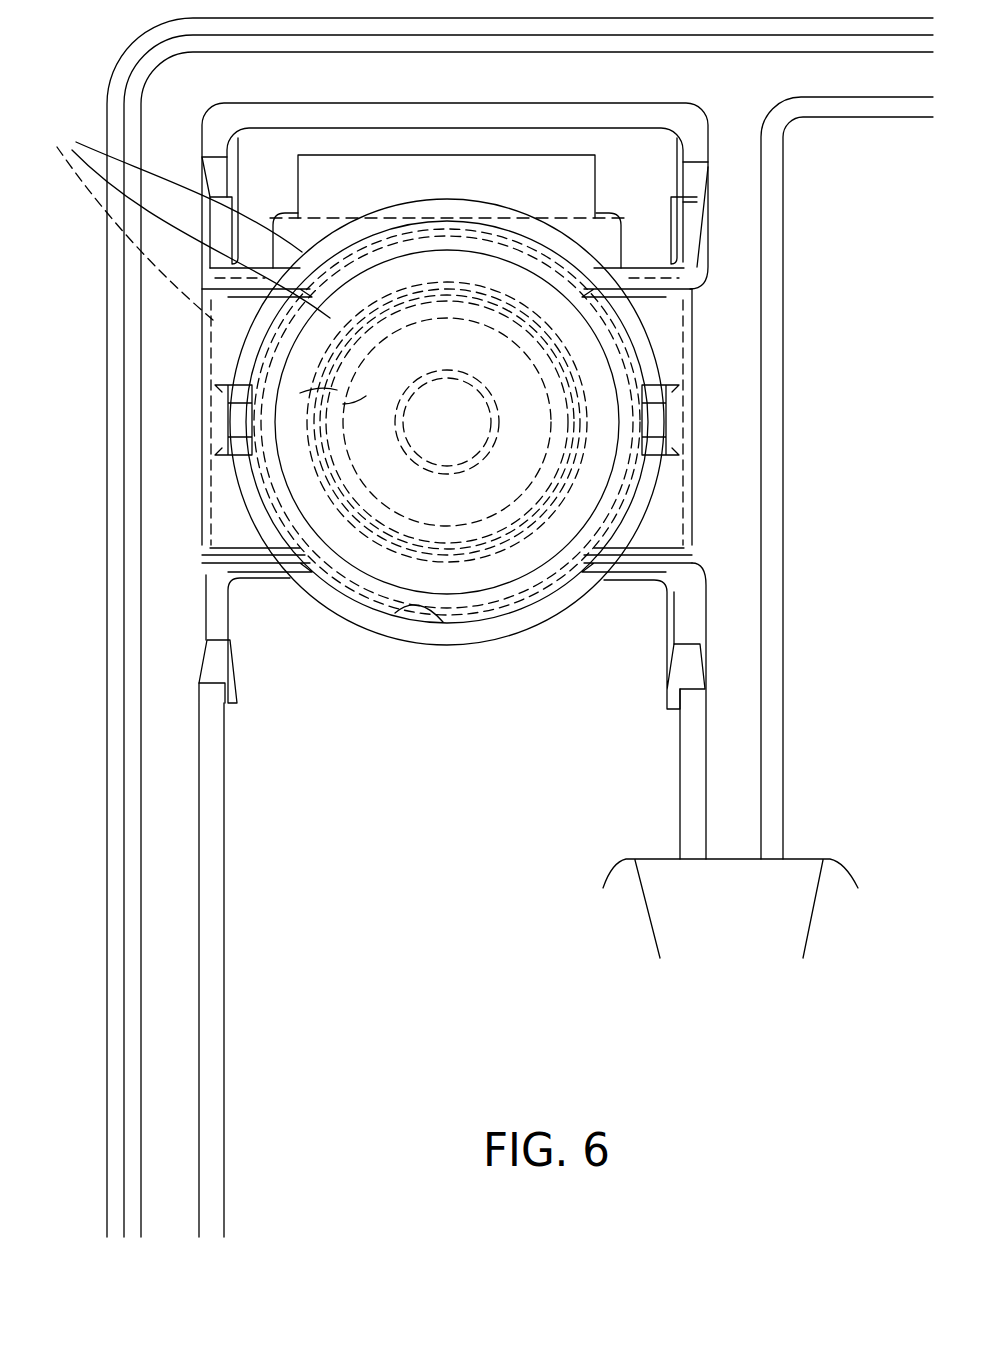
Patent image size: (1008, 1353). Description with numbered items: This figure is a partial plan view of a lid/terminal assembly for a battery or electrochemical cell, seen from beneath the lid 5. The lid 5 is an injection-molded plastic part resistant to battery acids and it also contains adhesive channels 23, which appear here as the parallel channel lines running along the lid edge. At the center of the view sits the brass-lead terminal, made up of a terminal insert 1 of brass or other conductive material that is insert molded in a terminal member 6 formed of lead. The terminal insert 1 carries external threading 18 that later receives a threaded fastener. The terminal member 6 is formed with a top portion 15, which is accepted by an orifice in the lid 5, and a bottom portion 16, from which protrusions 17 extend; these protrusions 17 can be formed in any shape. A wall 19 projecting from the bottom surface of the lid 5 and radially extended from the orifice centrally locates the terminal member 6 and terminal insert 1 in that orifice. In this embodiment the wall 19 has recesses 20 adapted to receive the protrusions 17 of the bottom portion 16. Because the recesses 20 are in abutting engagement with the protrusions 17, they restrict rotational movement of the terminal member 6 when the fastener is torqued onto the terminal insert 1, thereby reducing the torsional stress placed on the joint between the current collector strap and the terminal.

The lid 5 is at (137, 42).
The bottom portion 16 is at (186, 219).
The external threading 18 is at (217, 403).
The terminal insert 1 is at (203, 431).
The top portion 15 is at (207, 540).
The wall 19 is at (402, 608).
The adhesive channels 23 is at (170, 812).
The protrusions 17 is at (637, 352).
The recesses 20 is at (667, 424).
The terminal member 6 is at (690, 470).